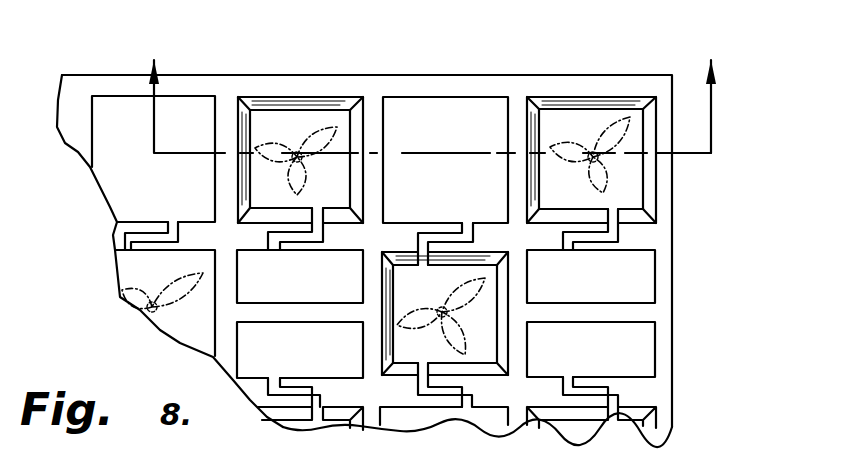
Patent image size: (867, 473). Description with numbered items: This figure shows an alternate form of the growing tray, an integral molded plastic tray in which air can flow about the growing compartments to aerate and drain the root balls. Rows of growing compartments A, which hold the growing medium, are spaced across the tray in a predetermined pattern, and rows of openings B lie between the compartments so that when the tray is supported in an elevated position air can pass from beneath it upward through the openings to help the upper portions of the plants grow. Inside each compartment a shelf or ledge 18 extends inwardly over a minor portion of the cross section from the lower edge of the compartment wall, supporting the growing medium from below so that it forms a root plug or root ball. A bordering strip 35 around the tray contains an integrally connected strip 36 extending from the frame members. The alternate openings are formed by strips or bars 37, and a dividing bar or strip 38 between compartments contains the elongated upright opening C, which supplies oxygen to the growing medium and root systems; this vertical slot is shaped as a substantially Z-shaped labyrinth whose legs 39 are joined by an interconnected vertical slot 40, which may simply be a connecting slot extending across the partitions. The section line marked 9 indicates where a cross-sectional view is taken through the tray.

The section line 9- 9 is at (433, 94).
The shelf or ledge 18 is at (245, 123).
The bordering strip 35 is at (434, 88).
The integrally connected strip 36 is at (518, 133).
The strips or bars 37 is at (614, 313).
The dividing bar or strip 38 is at (640, 233).
The legs 39 is at (617, 221).
The interconnected vertical slot 40 is at (603, 238).
The growing compartments A is at (337, 134).
The openings B is at (250, 283).
The elongated upright openings C is at (599, 238).